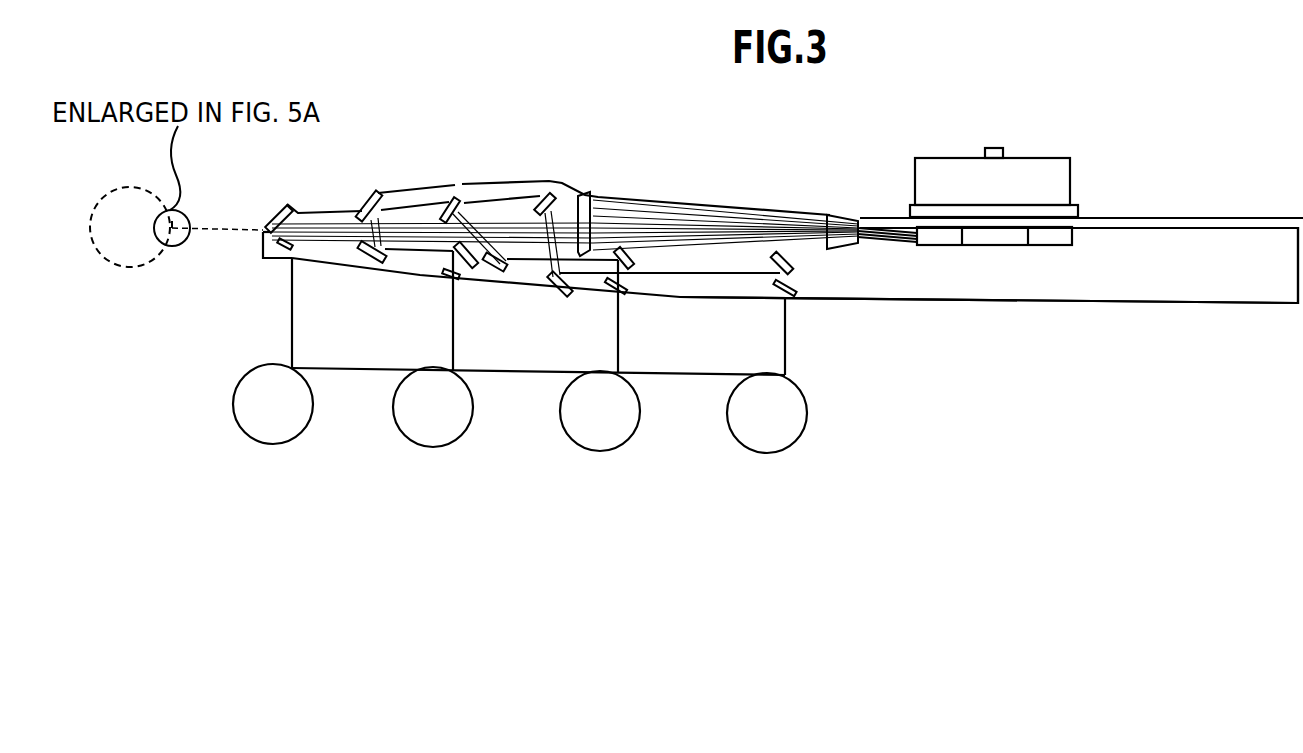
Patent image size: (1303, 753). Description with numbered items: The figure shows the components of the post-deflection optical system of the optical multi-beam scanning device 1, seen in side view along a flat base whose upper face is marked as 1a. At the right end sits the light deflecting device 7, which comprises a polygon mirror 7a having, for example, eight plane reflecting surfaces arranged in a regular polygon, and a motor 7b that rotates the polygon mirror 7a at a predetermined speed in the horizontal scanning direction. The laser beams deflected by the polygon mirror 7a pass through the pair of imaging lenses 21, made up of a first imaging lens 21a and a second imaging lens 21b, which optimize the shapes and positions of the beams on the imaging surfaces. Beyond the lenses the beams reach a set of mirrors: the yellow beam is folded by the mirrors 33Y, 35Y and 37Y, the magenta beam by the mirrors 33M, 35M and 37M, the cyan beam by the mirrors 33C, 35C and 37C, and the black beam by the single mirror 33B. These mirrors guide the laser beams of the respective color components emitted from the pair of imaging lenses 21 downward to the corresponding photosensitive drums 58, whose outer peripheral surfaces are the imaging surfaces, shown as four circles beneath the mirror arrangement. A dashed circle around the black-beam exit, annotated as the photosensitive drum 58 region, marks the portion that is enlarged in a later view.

The optical multi-beam scanning device 1 is at (1245, 220).
The base plate upper surface 1a is at (1199, 226).
The light deflecting device 7 is at (1021, 186).
The polygon mirror 7a is at (1073, 240).
The motor 7b is at (1078, 190).
The pair of imaging lenses 21 is at (718, 177).
The imaging lens 21a is at (595, 193).
The imaging lens 21b is at (838, 215).
The mirror 33B is at (289, 205).
The mirror 33C is at (376, 190).
The mirror 33M is at (455, 186).
The mirror 33Y is at (548, 192).
The mirror 35C is at (368, 262).
The mirror 35M is at (513, 265).
The mirror 35Y is at (571, 295).
The mirror 37C is at (437, 262).
The mirror 37M is at (640, 258).
The mirror 37Y is at (793, 265).
The photosensitive drum 58 is at (120, 266).